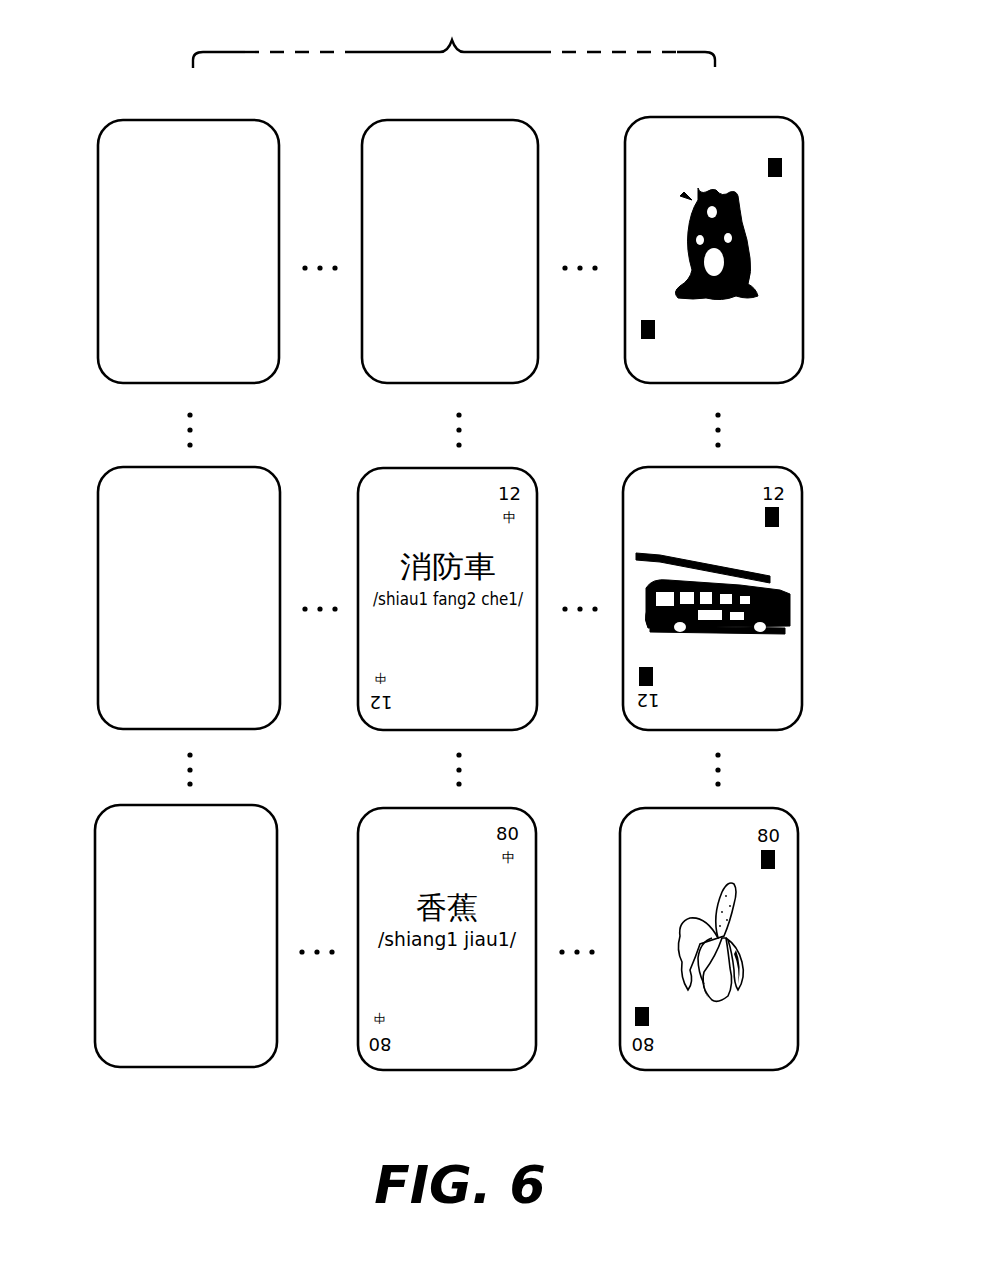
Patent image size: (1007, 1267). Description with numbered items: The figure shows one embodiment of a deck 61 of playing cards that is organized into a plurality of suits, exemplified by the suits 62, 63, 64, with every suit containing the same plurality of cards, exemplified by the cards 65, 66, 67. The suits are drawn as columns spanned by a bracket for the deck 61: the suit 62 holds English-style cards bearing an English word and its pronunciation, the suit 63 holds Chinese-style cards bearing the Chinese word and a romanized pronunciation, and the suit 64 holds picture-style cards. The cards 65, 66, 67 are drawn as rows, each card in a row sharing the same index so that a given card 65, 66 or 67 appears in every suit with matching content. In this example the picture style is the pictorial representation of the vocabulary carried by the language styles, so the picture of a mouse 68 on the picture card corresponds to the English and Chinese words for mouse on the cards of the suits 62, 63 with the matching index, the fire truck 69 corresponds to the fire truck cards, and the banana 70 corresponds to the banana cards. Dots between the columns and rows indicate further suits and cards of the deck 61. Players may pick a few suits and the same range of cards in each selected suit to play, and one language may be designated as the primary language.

The deck 61 is at (454, 35).
The suit 62 is at (210, 132).
The suit 63 is at (456, 133).
The suit 64 is at (748, 221).
The card 65 is at (166, 229).
The card 66 is at (104, 612).
The card 67 is at (102, 910).
The mouse 68 is at (763, 216).
The fire truck 69 is at (763, 558).
The banana 70 is at (755, 896).